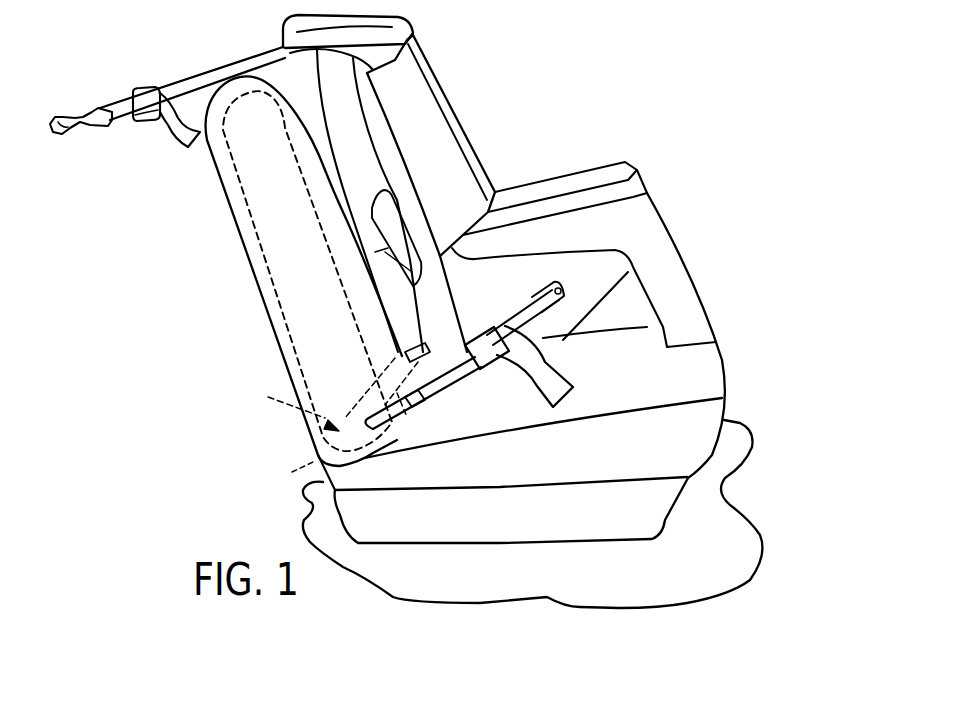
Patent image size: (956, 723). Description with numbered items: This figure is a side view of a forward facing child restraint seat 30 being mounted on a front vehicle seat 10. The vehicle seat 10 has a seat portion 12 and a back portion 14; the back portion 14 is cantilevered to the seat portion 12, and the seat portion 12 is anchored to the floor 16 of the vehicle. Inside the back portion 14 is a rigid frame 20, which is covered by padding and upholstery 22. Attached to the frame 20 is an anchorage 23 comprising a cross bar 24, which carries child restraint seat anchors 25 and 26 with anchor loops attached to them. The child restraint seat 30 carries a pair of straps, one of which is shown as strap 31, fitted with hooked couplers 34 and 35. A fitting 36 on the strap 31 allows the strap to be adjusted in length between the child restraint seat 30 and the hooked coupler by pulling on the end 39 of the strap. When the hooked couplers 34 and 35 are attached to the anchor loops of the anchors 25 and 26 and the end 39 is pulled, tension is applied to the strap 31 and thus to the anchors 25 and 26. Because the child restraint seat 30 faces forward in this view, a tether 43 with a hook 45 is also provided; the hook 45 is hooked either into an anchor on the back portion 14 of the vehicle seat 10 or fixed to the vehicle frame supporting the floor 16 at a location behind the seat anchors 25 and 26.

The front vehicle seat 10 is at (729, 383).
The seat portion 12 is at (512, 410).
The back portion 14 is at (224, 166).
The floor 16 is at (627, 590).
The rigid frame 20 is at (257, 191).
The padding and upholstery 22 is at (267, 70).
The anchorage 23 is at (291, 406).
The cross bar 24 is at (292, 471).
The child restraint seat anchor 25 is at (357, 413).
The child restraint seat anchor 26 is at (400, 355).
The child restraint seat 30 is at (461, 108).
The strap 31 is at (524, 318).
The hooked coupler 34 is at (392, 400).
The hooked coupler 35 is at (422, 385).
The fitting 36 is at (468, 337).
The end 39 is at (548, 372).
The tether 43 is at (200, 81).
The hook 45 is at (82, 117).